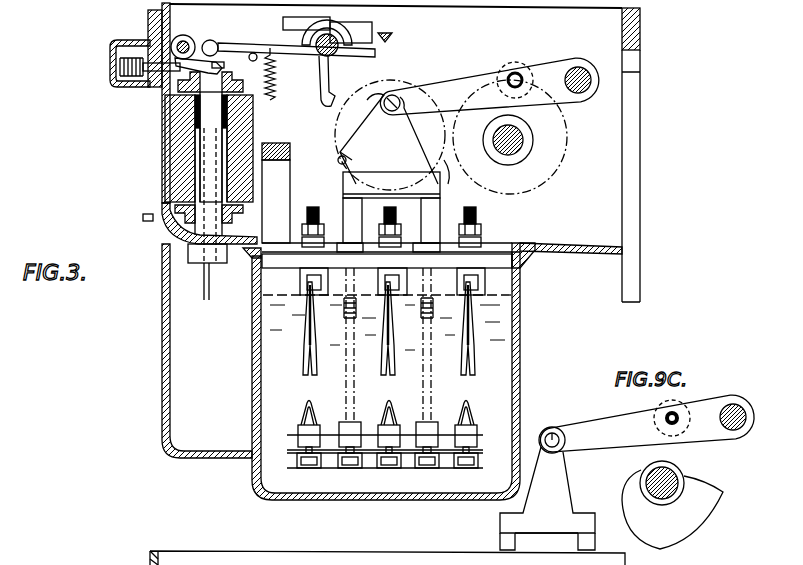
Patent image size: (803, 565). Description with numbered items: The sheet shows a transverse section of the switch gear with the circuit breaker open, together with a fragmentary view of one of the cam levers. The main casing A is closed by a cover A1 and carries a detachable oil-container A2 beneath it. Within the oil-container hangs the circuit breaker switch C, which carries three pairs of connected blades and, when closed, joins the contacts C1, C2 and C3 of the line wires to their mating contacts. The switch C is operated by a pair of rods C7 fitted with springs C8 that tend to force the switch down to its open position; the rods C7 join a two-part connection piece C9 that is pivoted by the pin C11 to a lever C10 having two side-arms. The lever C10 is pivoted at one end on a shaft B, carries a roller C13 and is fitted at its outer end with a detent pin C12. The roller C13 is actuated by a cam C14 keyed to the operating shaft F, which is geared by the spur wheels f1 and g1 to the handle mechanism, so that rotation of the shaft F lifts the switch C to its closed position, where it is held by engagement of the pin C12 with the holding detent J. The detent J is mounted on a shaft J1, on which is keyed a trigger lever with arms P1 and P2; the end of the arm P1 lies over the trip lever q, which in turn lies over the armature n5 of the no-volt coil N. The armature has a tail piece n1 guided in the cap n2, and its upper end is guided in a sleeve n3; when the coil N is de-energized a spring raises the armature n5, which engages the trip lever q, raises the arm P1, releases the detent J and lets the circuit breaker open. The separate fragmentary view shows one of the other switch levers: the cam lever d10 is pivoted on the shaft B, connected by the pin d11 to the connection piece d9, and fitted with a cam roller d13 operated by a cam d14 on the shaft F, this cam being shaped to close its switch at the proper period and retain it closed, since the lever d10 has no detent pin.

In FIG. 3, the main casing A is at (641, 34).
In FIG. 3, the cover A1 is at (220, 66).
In FIG. 3, the oil-container A2 is at (520, 324).
In FIG. 3, the trip lever q is at (178, 40).
In FIG. 3, the no-volt coil N is at (190, 139).
In FIG. 3, the tail piece n1 is at (207, 299).
In FIG. 3, the cap n2 is at (202, 220).
In FIG. 3, the sleeve n3 is at (186, 110).
In FIG. 3, the armature n5 is at (212, 136).
In FIG. 3, the trigger lever arm P1 is at (266, 50).
In FIG. 3, the trigger lever arm P2 is at (368, 44).
In FIG. 3, the holding detent J is at (324, 82).
In FIG. 3, the detent shaft J1 is at (336, 52).
In FIG. 3, the two-part connection piece C9 is at (344, 184).
In FIG. 3, the spur wheel g1 is at (432, 176).
In FIG. 3, the lever C10 is at (444, 90).
In FIG. 3, the pin C11 is at (401, 112).
In FIG. 3, the detent pin C12 is at (338, 160).
In FIG. 3, the roller C13 is at (518, 70).
In FIG. 3, the cam C14 is at (528, 121).
In FIG. 3, the shaft B is at (578, 66).
In FIG. 9C, the shaft B is at (733, 404).
In FIG. 3, the operating shaft F is at (512, 156).
In FIG. 9C, the operating shaft F is at (684, 487).
In FIG. 3, the spur wheel f1 is at (566, 164).
In FIG. 3, the circuit breaker switch C is at (304, 410).
In FIG. 3, the contact C1 is at (301, 357).
In FIG. 3, the contact C2 is at (394, 370).
In FIG. 3, the contact C3 is at (474, 366).
In FIG. 3, the rods C7 is at (428, 335).
In FIG. 3, the springs C8 is at (436, 408).
In FIG. 9C, the connection piece d9 is at (558, 501).
In FIG. 9C, the cam lever d10 is at (660, 432).
In FIG. 9C, the pin d11 is at (552, 436).
In FIG. 9C, the cam roller d13 is at (686, 432).
In FIG. 9C, the cam d14 is at (688, 530).